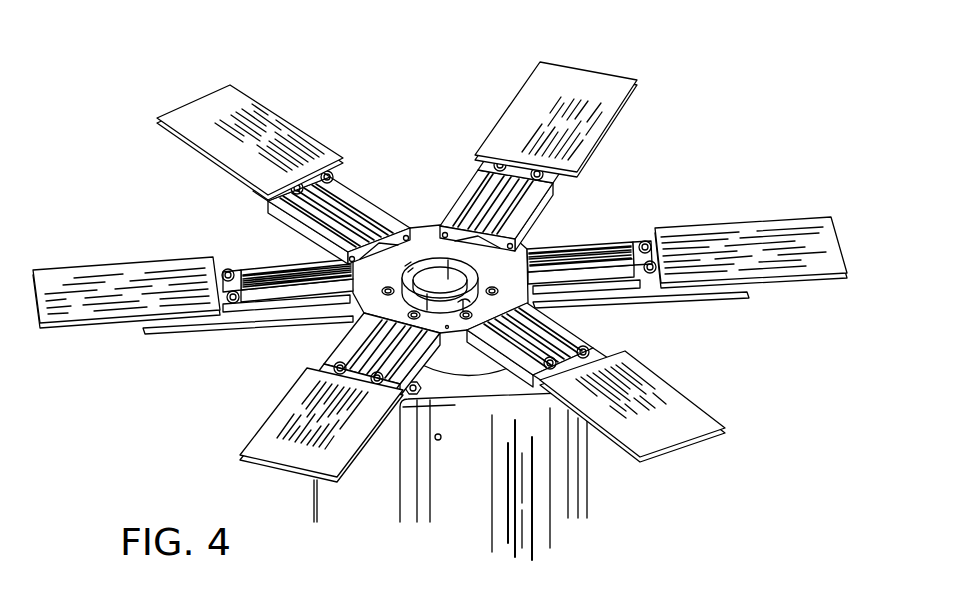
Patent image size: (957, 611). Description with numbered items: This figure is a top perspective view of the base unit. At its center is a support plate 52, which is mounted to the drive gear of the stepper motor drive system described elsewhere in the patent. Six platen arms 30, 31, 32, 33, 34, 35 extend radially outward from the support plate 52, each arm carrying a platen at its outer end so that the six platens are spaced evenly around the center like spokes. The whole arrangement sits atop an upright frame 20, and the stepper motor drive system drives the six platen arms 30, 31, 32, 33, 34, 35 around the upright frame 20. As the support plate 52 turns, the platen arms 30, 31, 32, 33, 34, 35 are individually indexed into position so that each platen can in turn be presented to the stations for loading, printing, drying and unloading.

The upright frame 20 is at (588, 477).
The platen arm 30 is at (753, 220).
The platen arm 31 is at (578, 63).
The platen arm 32 is at (277, 113).
The platen arm 33 is at (113, 327).
The platen arm 34 is at (267, 417).
The platen arm 35 is at (690, 395).
The support plate 52 is at (432, 222).